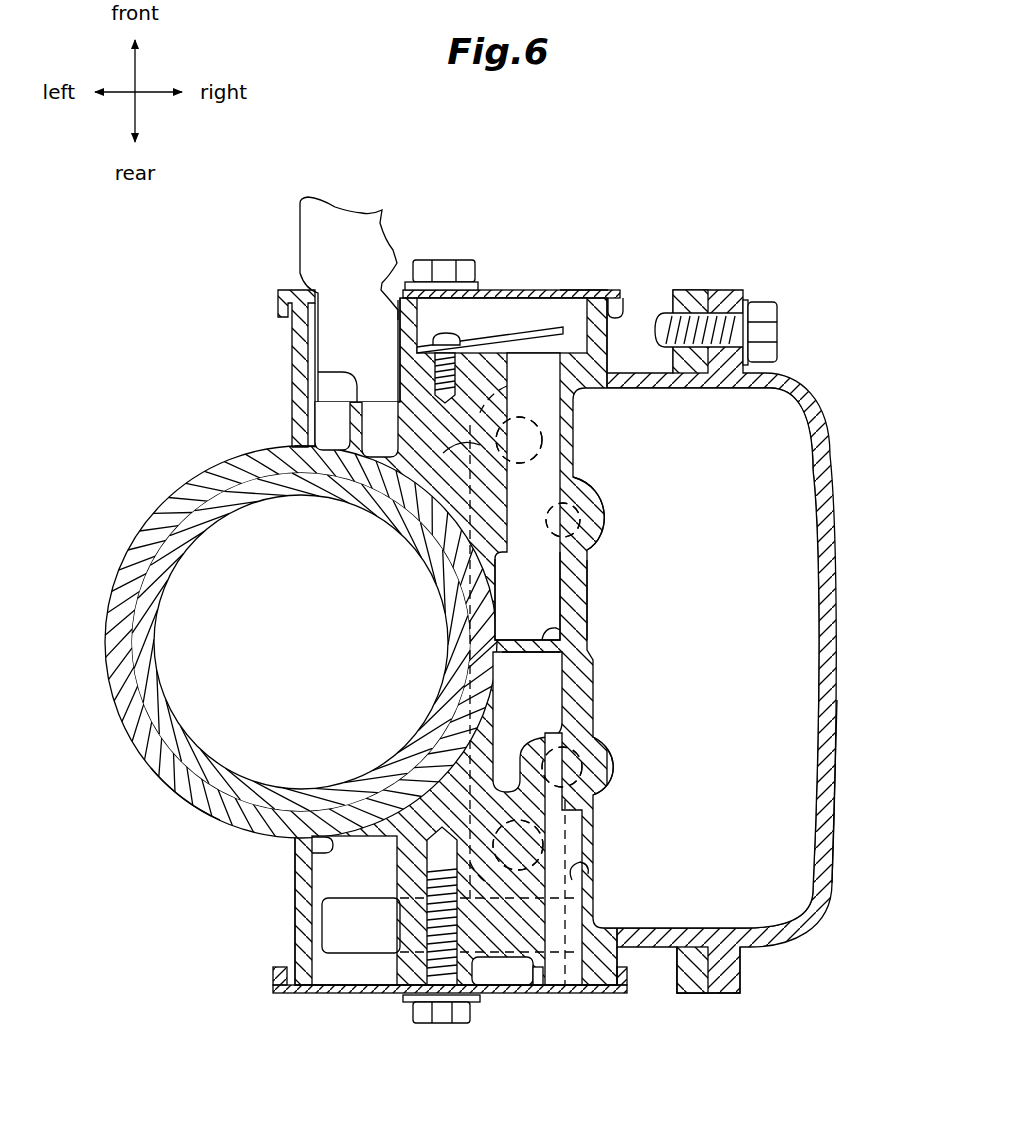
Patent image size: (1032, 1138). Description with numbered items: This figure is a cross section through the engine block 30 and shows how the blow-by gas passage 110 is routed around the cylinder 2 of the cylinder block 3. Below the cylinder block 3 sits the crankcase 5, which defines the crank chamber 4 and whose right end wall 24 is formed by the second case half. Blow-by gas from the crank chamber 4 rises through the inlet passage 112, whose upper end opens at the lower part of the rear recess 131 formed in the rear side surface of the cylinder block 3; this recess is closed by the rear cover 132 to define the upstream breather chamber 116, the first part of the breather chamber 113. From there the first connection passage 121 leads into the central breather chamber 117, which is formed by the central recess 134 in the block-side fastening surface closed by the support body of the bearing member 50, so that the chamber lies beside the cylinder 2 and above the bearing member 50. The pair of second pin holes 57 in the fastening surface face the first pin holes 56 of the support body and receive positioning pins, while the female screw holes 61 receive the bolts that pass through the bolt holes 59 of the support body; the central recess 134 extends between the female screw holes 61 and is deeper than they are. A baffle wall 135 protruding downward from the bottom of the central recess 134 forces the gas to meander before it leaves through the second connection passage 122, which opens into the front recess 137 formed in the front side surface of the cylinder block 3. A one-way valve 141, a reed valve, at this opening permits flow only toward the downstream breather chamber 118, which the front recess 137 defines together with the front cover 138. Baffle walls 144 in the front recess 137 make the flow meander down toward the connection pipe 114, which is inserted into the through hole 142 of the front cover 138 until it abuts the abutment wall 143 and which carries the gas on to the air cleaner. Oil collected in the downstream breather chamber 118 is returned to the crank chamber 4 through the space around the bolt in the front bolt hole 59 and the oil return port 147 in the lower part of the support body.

The cylinder 2 is at (160, 570).
The cylinder block 3 is at (165, 510).
The crank chamber 4 is at (766, 647).
The crankcase 5 is at (688, 996).
The right end wall 24 is at (836, 760).
The engine block 30 is at (185, 812).
The bearing member 50 is at (590, 598).
The first pin holes 56 is at (582, 518).
The second pin holes 57 is at (582, 518).
The bolt hole 59 is at (545, 436).
The female screw holes 61 is at (545, 436).
The blow-by gas passage 110 is at (518, 672).
The inlet passage 112 is at (350, 937).
The breather chamber 113 is at (513, 720).
The connection pipe 114 is at (312, 228).
The upstream breather chamber 116 is at (335, 882).
The central breather chamber 117 is at (513, 622).
The downstream breather chamber 118 is at (505, 290).
The first connection passage 121 is at (580, 878).
The second connection passage 122 is at (500, 485).
The rear recess 131 is at (328, 846).
The rear cover 132 is at (307, 997).
The central recess 134 is at (505, 600).
The baffle wall 135 is at (560, 630).
The front recess 137 is at (605, 297).
The front cover 138 is at (572, 290).
The one-way valve 141 is at (533, 330).
The through hole 142 is at (393, 317).
The abutment wall 143 is at (348, 374).
The baffle walls 144 is at (445, 322).
The oil return port 147 is at (455, 455).